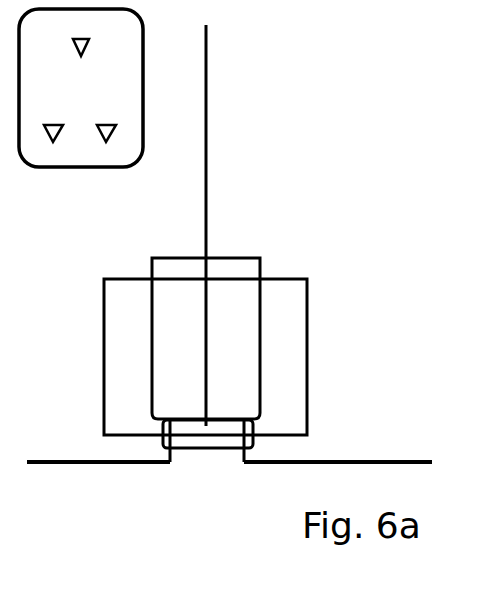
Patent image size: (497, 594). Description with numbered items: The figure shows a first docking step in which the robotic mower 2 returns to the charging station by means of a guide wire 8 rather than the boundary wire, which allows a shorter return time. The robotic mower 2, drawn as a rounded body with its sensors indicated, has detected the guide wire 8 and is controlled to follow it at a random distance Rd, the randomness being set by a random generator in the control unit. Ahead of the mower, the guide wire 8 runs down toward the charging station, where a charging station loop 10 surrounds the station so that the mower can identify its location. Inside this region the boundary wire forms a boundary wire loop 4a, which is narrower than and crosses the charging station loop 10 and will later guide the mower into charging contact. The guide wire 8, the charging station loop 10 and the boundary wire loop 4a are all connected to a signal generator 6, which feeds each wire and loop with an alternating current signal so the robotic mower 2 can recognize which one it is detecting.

The robotic mower 2 is at (81, 88).
The random distance Rd is at (202, 89).
The guide wire 8 is at (206, 126).
The boundary wire loop 4a is at (236, 256).
The charging station loop 10 is at (307, 352).
The signal generator 6 is at (180, 442).